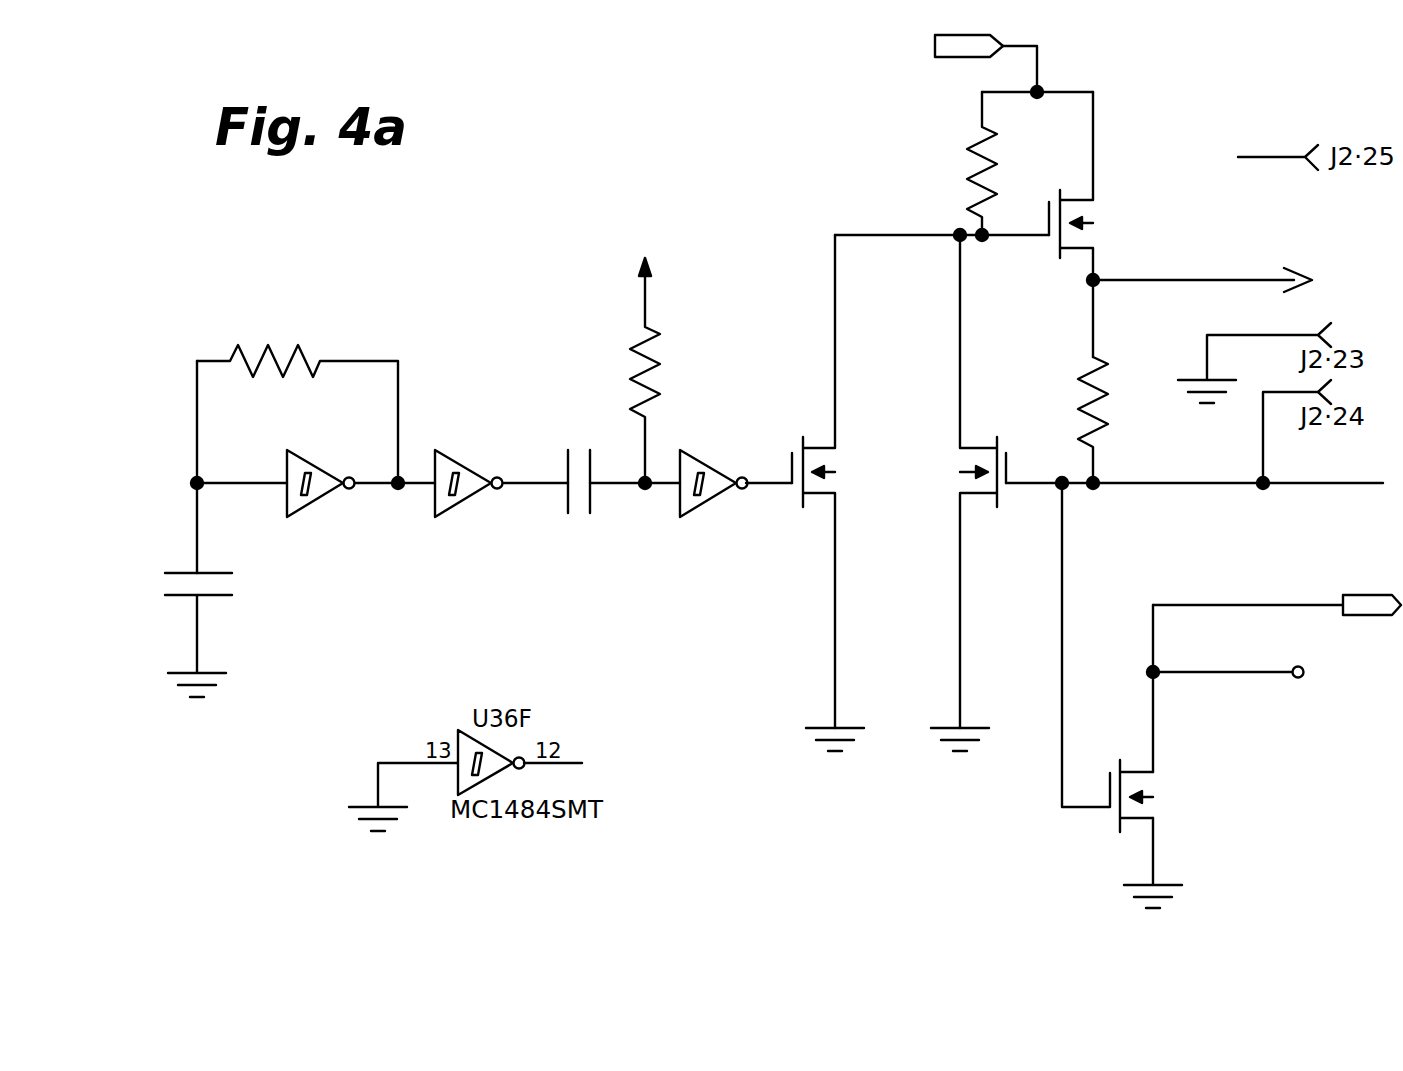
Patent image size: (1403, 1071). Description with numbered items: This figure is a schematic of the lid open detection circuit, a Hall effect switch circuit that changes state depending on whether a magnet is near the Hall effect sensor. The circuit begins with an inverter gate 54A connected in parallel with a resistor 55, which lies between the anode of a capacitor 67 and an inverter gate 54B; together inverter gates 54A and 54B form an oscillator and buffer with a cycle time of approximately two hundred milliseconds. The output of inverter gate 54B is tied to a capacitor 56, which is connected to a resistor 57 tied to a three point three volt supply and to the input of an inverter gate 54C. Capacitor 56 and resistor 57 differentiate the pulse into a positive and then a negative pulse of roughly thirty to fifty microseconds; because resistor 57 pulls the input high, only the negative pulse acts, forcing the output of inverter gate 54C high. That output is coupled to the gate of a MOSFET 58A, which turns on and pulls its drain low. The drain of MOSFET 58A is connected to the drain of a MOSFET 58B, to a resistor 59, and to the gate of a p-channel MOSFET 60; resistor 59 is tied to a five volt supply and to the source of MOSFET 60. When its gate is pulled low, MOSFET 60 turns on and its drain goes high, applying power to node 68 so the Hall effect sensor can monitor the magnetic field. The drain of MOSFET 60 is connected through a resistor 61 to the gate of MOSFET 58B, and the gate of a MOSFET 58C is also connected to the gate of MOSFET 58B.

The resistor 55 is at (302, 352).
The inverter gate 54A is at (352, 491).
The inverter gate 54B is at (436, 448).
The inverter gate 54C is at (688, 450).
The capacitor 56 is at (568, 452).
The resistor 57 is at (633, 347).
The MOSFET 58A is at (835, 305).
The MOSFET 58B is at (962, 345).
The MOSFET 58C is at (1155, 713).
The resistor 59 is at (975, 138).
The MOSFET 60 is at (1098, 126).
The resistor 61 is at (1090, 375).
The capacitor 67 is at (232, 597).
The node 68 is at (1283, 272).